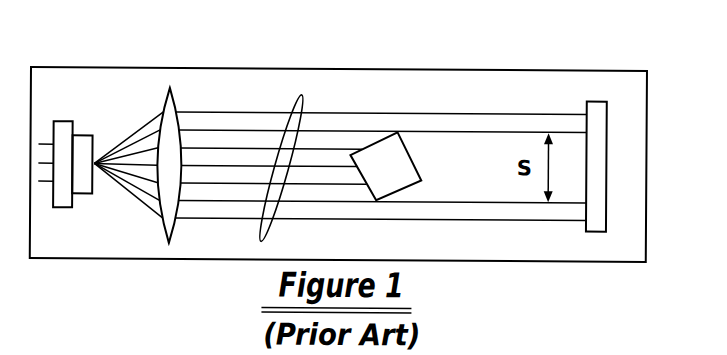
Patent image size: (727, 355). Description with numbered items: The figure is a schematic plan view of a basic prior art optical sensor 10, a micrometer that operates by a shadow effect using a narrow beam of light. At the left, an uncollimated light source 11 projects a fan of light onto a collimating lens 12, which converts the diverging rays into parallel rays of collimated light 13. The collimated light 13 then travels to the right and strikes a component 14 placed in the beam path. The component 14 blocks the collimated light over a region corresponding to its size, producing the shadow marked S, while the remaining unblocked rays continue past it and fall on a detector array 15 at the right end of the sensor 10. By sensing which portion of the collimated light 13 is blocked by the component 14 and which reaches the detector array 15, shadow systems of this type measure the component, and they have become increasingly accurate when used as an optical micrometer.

The optical sensor 10 is at (256, 52).
The uncollimated light source 11 is at (96, 161).
The collimating lens 12 is at (171, 88).
The collimated light 13 is at (301, 91).
The component 14 is at (380, 170).
The detector array 15 is at (598, 140).